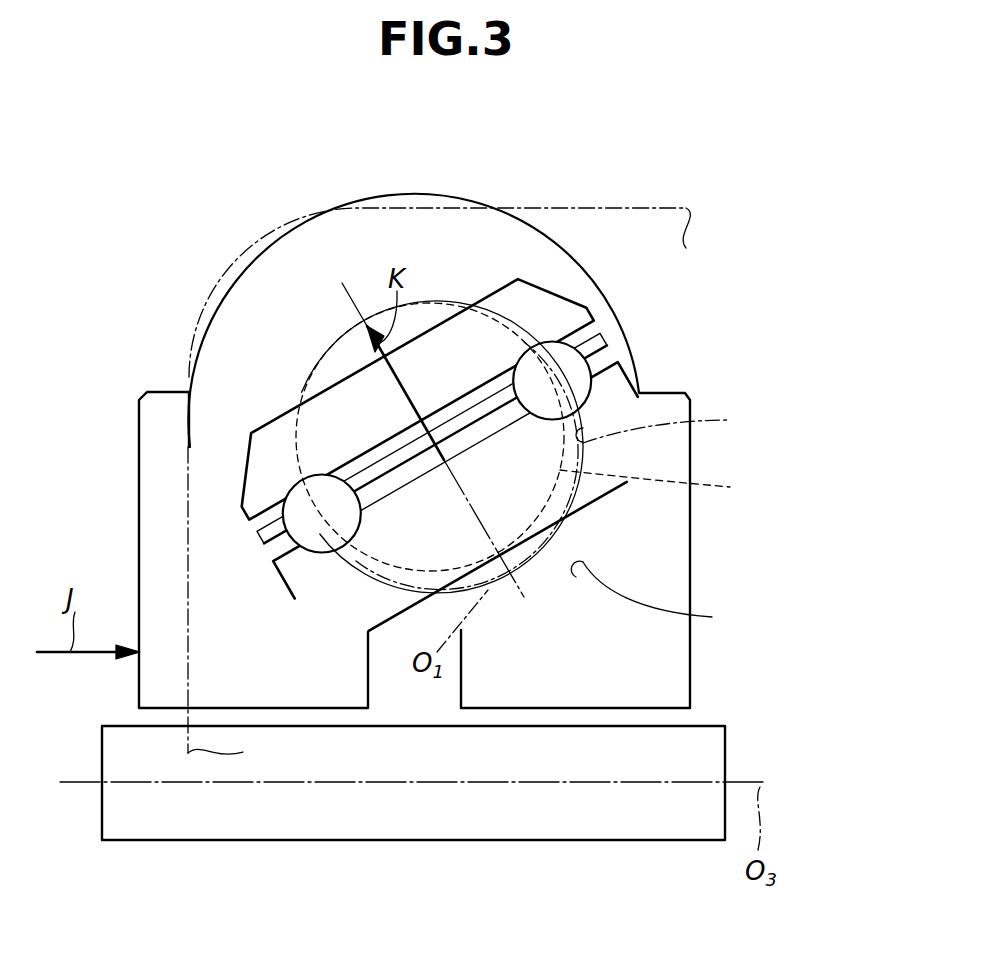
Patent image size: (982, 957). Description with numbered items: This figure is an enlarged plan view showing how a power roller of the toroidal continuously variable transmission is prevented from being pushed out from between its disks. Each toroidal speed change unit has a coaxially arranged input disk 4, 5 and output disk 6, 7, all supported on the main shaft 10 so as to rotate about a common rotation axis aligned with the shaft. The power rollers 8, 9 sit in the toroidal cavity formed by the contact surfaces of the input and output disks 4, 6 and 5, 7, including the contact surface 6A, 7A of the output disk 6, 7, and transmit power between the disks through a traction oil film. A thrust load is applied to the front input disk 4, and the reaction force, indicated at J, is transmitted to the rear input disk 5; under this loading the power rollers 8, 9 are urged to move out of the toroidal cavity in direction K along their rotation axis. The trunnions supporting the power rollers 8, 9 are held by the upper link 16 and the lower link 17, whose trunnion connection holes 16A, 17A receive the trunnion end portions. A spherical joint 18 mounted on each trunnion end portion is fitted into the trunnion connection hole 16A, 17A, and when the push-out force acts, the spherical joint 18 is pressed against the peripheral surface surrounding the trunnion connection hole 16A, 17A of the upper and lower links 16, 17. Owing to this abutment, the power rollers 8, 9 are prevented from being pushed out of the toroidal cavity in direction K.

The input disk 4 is at (209, 550).
The input disk 5 is at (162, 466).
The output disk 6 is at (626, 550).
The output disk 7 is at (673, 552).
The contact surface 6A is at (499, 416).
The contact surface 7A is at (499, 416).
The power roller 8 is at (469, 436).
The power roller 9 is at (622, 380).
The main shaft 10 is at (472, 810).
The upper link 16 is at (439, 442).
The lower link 17 is at (499, 208).
The trunnion connection hole 16A is at (607, 466).
The trunnion connection hole 17A is at (607, 466).
The spherical joint 18 is at (532, 437).